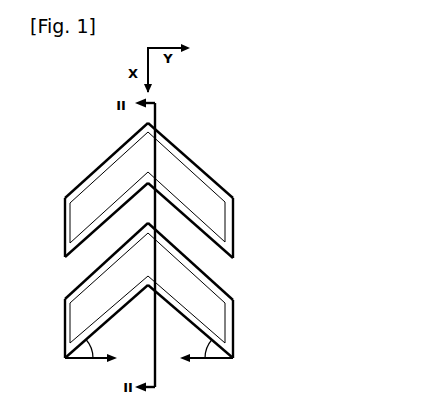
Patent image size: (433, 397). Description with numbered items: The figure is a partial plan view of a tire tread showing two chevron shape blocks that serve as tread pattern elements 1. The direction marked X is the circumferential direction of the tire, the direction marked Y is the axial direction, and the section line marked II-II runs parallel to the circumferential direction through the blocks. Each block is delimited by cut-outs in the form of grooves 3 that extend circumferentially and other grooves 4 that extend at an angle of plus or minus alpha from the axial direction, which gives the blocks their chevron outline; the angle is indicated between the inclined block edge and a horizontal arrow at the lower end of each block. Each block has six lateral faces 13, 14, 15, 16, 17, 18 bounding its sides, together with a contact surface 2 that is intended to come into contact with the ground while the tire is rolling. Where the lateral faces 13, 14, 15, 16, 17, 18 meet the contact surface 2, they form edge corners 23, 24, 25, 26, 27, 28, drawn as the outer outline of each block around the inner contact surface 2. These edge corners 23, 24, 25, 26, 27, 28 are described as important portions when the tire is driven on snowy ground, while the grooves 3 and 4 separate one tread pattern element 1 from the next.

The tread pattern element 1 is at (148, 240).
The contact surface 2 is at (147, 237).
The groove 3 is at (146, 349).
The groove 4 is at (84, 260).
The lateral face 13 is at (63, 228).
The lateral face 14 is at (69, 193).
The lateral face 15 is at (228, 192).
The lateral face 16 is at (237, 228).
The lateral face 17 is at (162, 204).
The lateral face 18 is at (134, 205).
The edge corner 23 is at (63, 328).
The edge corner 24 is at (69, 293).
The edge corner 25 is at (230, 293).
The edge corner 26 is at (236, 328).
The edge corner 27 is at (160, 298).
The edge corner 28 is at (137, 300).